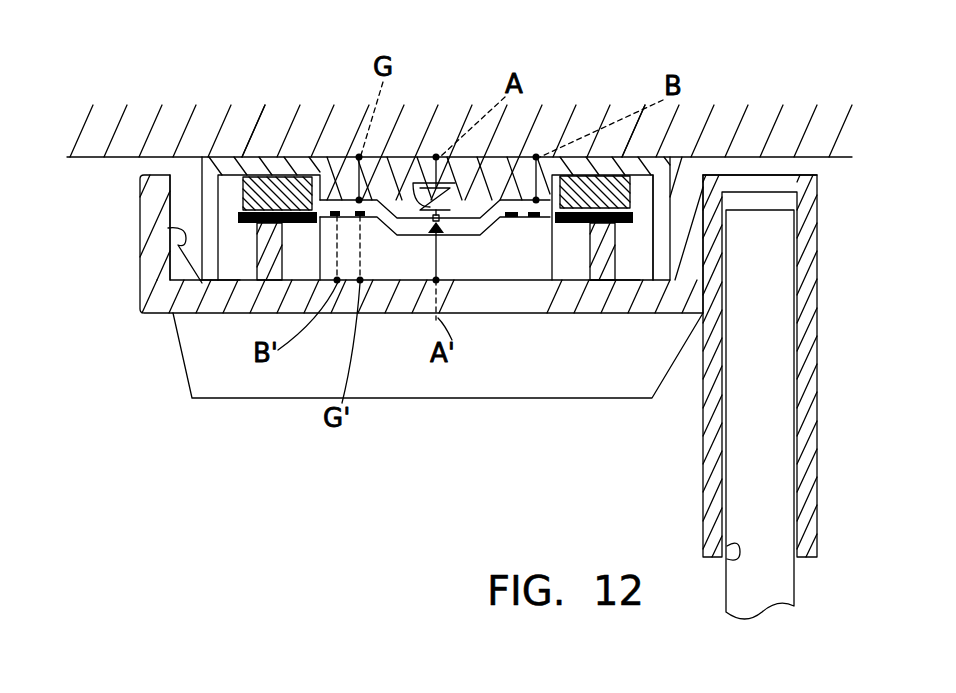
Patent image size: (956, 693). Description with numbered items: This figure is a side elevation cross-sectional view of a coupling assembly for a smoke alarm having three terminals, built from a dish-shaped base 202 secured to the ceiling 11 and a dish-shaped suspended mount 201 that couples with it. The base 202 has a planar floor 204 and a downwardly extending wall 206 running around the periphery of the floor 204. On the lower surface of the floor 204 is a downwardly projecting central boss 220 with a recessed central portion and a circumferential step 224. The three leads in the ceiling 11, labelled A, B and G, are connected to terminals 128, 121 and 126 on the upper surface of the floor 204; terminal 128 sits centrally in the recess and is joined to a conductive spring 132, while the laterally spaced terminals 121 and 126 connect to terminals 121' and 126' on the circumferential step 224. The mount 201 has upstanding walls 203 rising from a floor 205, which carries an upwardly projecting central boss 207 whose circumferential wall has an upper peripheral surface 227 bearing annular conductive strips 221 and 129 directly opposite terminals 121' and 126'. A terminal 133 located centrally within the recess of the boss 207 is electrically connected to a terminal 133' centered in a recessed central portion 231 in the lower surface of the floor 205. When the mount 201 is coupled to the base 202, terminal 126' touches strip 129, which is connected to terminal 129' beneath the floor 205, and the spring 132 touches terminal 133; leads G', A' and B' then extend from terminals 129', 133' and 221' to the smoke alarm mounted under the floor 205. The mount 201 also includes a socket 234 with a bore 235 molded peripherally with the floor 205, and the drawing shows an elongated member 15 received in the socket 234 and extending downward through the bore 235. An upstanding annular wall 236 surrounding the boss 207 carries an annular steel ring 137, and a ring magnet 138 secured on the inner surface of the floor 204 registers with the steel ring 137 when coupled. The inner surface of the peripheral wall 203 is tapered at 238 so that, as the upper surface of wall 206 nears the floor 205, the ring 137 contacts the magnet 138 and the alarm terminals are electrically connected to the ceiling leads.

The ceiling 11 is at (267, 140).
The tube 15 is at (732, 592).
The terminal 121 is at (610, 162).
The terminal 121' is at (680, 131).
The terminal 126 is at (334, 116).
The terminal 126' is at (435, 154).
The terminal 128 is at (440, 160).
The annular conductive strip 129 is at (568, 115).
The terminal 129' is at (320, 306).
The conductive spring 132 is at (436, 157).
The terminal 133 is at (475, 263).
The terminal 133' is at (470, 338).
The annular steel ring 137 is at (715, 176).
The ring magnet 138 is at (613, 197).
The mount 201 is at (162, 313).
The base 202 is at (233, 157).
The upstanding walls 203 is at (170, 233).
The planar floor 204 is at (220, 186).
The floor 205 is at (590, 282).
The downwardly extending wall 206 is at (673, 213).
The central boss 207 is at (383, 283).
The central boss 220 is at (583, 193).
The annular conductive strip 221 is at (199, 239).
The terminal 221' is at (277, 282).
The circumferential step 224 is at (306, 178).
The upper peripheral surface 227 is at (608, 283).
The recessed central portion 231 is at (550, 222).
The socket 234 is at (702, 437).
The bore 235 is at (727, 560).
The annular wall 236 is at (217, 275).
The taper 238 is at (170, 228).